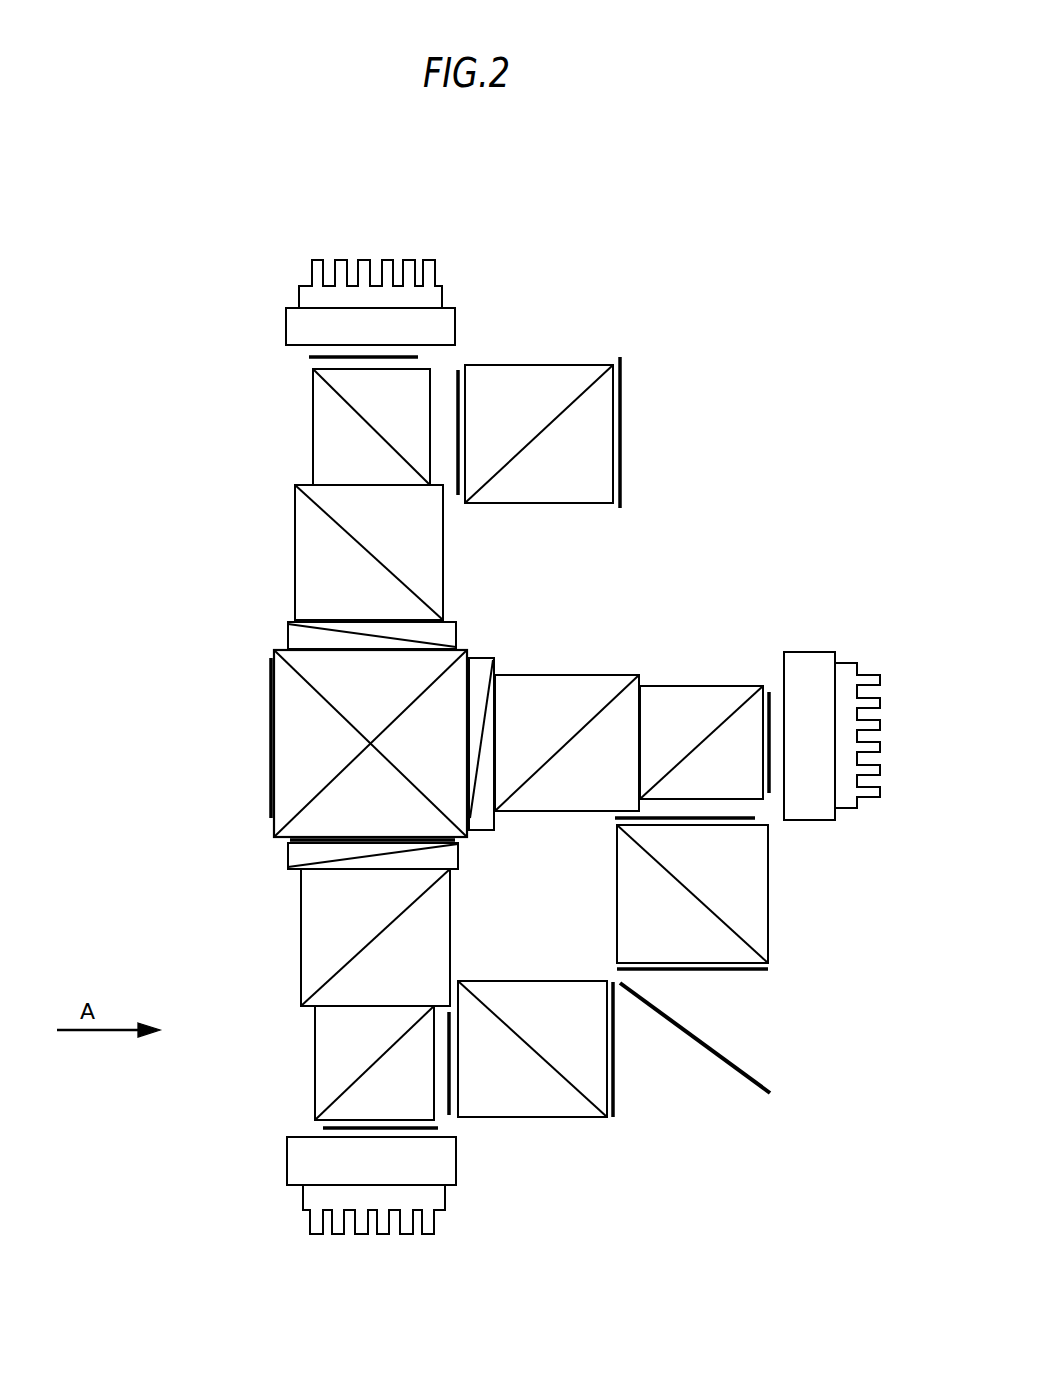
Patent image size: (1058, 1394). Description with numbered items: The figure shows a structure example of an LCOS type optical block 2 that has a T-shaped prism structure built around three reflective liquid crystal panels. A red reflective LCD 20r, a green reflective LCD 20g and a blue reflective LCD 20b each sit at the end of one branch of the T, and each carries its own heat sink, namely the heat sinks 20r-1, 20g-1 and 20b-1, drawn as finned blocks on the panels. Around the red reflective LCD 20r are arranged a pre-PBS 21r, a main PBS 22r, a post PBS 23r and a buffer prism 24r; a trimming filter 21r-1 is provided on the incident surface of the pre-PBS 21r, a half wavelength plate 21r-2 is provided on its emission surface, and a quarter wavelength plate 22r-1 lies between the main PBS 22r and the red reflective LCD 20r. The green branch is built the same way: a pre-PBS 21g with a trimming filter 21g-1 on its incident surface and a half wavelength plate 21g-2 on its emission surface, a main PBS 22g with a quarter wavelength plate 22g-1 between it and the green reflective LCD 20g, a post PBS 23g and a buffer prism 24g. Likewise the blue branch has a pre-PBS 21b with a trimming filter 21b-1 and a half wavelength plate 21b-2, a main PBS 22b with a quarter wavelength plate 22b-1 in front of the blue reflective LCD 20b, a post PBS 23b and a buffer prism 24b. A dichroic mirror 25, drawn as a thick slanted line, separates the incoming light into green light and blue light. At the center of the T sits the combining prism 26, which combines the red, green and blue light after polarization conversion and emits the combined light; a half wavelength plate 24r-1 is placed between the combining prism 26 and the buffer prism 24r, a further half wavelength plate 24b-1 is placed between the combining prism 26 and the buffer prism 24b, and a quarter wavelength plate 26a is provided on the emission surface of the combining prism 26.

The optical block 2 is at (413, 157).
The red reflective LCD 20r is at (453, 306).
The heat sink 20r-1 is at (315, 261).
The pre-PBS 21r is at (540, 364).
The trimming filter 21r-1 is at (622, 390).
The ½ wavelength plate 21r-2 is at (458, 368).
The main PBS 22r is at (312, 432).
The ¼ wavelength plate 22r-1 is at (310, 357).
The post PBS 23r is at (295, 530).
The buffer prism 24r is at (287, 636).
The ½ wavelength plate 24r-1 is at (443, 643).
The 4p prism 26 is at (275, 836).
The ¼ wavelength plate 26a is at (270, 756).
The buffer prism 24g is at (479, 655).
The buffer prism 24b is at (301, 867).
The ½ wavelength plate 24b-1 is at (287, 847).
The post PBS 23g is at (553, 675).
The main PBS 22g is at (703, 686).
The ¼ wavelength plate 22g-1 is at (773, 805).
The green reflective LCD 20g is at (773, 690).
The heat sink 20g-1 is at (848, 661).
The pre-PBS 21g is at (770, 925).
The trimming filter 21g-1 is at (748, 972).
The ½ wavelength plate 21g-2 is at (616, 819).
The dichroic mirror 25 is at (770, 1094).
The post PBS 23b is at (301, 966).
The main PBS 22b is at (315, 1068).
The ¼ wavelength plate 22b-1 is at (323, 1128).
The blue reflective LCD 20b is at (287, 1167).
The heat sink 20b-1 is at (434, 1229).
The pre-PBS 21b is at (558, 1118).
The trimming filter 21b-1 is at (615, 1110).
The ½ wavelength plate 21b-2 is at (449, 1115).